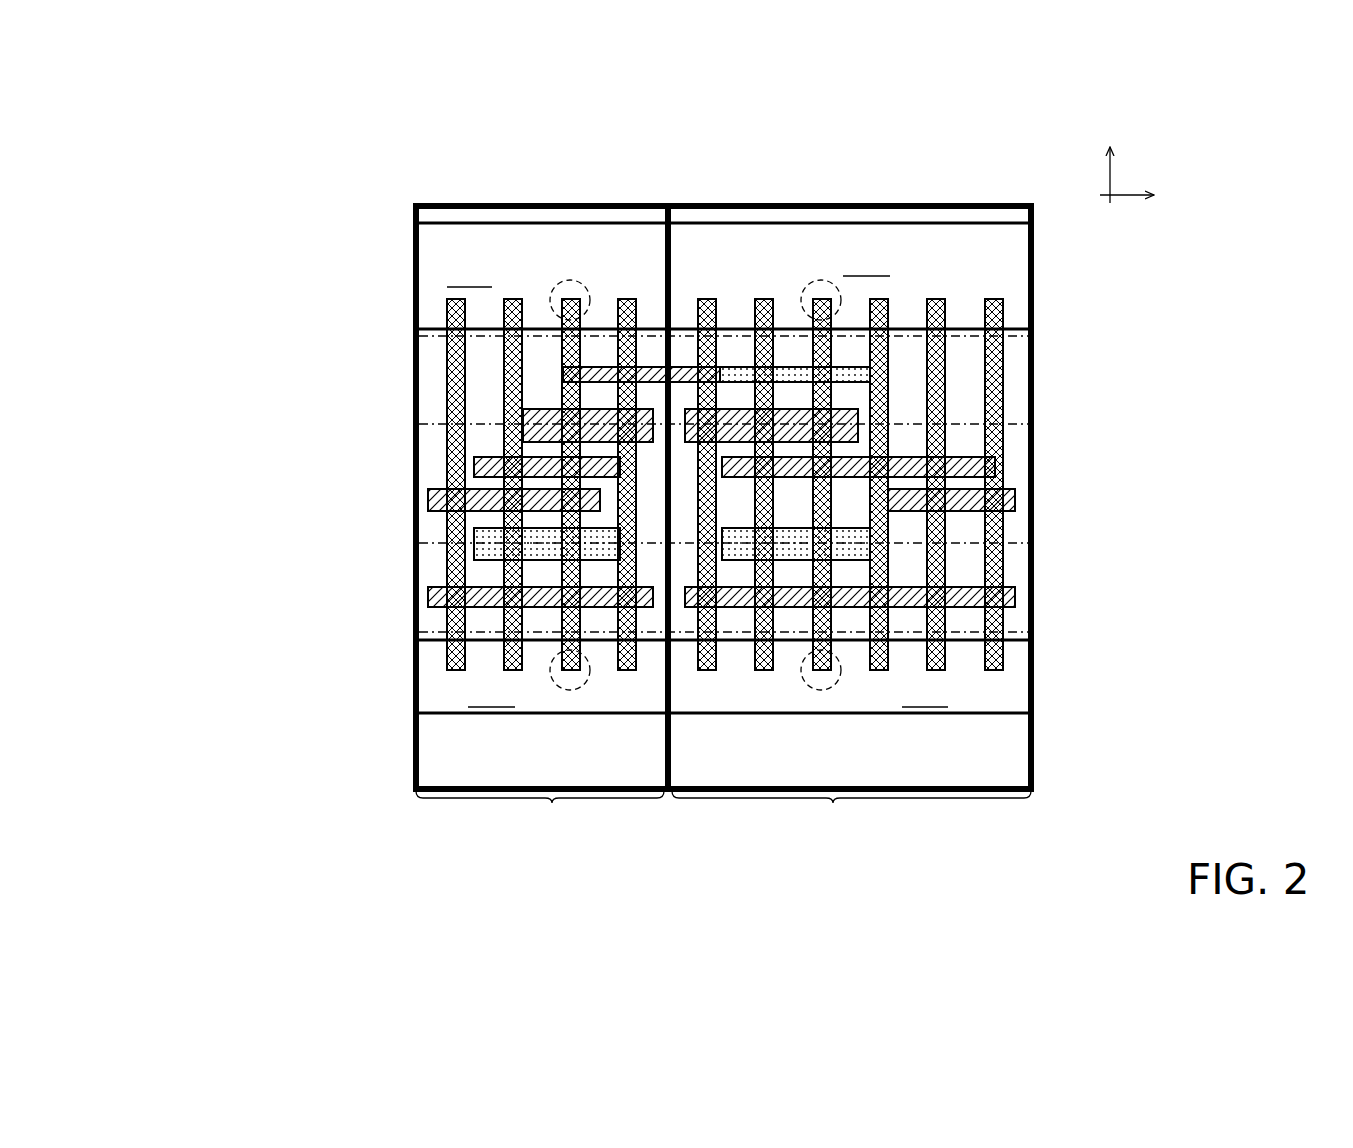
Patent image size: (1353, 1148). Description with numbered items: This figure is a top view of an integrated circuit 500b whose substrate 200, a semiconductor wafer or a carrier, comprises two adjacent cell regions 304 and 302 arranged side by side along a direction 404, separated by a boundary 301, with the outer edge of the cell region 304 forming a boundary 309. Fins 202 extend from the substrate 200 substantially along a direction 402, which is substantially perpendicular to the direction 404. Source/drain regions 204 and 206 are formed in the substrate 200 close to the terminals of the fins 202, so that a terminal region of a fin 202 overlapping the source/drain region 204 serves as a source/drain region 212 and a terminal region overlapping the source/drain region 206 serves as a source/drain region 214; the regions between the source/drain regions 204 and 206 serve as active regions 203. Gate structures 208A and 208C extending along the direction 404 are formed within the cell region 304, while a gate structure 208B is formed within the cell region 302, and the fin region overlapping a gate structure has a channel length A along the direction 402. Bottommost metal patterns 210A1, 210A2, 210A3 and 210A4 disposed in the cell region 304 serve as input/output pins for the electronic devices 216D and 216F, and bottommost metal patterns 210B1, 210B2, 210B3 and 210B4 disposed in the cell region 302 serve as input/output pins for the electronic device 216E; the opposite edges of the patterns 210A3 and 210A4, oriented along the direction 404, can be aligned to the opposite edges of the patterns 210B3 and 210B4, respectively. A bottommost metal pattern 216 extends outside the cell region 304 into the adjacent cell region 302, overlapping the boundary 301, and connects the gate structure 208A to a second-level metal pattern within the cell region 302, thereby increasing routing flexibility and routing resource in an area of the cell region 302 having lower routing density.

The integrated circuit 500b is at (418, 167).
The substrate 200 is at (1015, 746).
The fin 202 is at (994, 298).
The active region 203 is at (539, 326).
The source/drain region 204 is at (723, 256).
The source/drain region 206 is at (723, 697).
The gate structure 208A is at (790, 365).
The gate structure 208B is at (474, 543).
The gate structure 208C is at (850, 560).
The bottommost metal pattern 210A1 is at (995, 467).
The bottommost metal pattern 210A2 is at (1015, 502).
The bottommost metal pattern 210A3 is at (1015, 598).
The bottommost metal pattern 210A4 is at (742, 409).
The bottommost metal pattern 210B1 is at (474, 466).
The bottommost metal pattern 210B2 is at (428, 500).
The bottommost metal pattern 210B3 is at (430, 596).
The bottommost metal pattern 210B4 is at (598, 409).
The source/drain region 212 is at (570, 280).
The source/drain region 214 is at (570, 690).
The bottommost metal pattern 216 is at (653, 364).
The electronic device 216D is at (160, 253).
The electronic device 216E is at (160, 402).
The electronic device 216F is at (151, 611).
The boundary 301 is at (677, 351).
The cell region 302 is at (540, 814).
The cell region 304 is at (851, 814).
The boundary 309 is at (1036, 263).
The direction 402 is at (1110, 154).
The direction 404 is at (1156, 194).
The length A is at (822, 366).